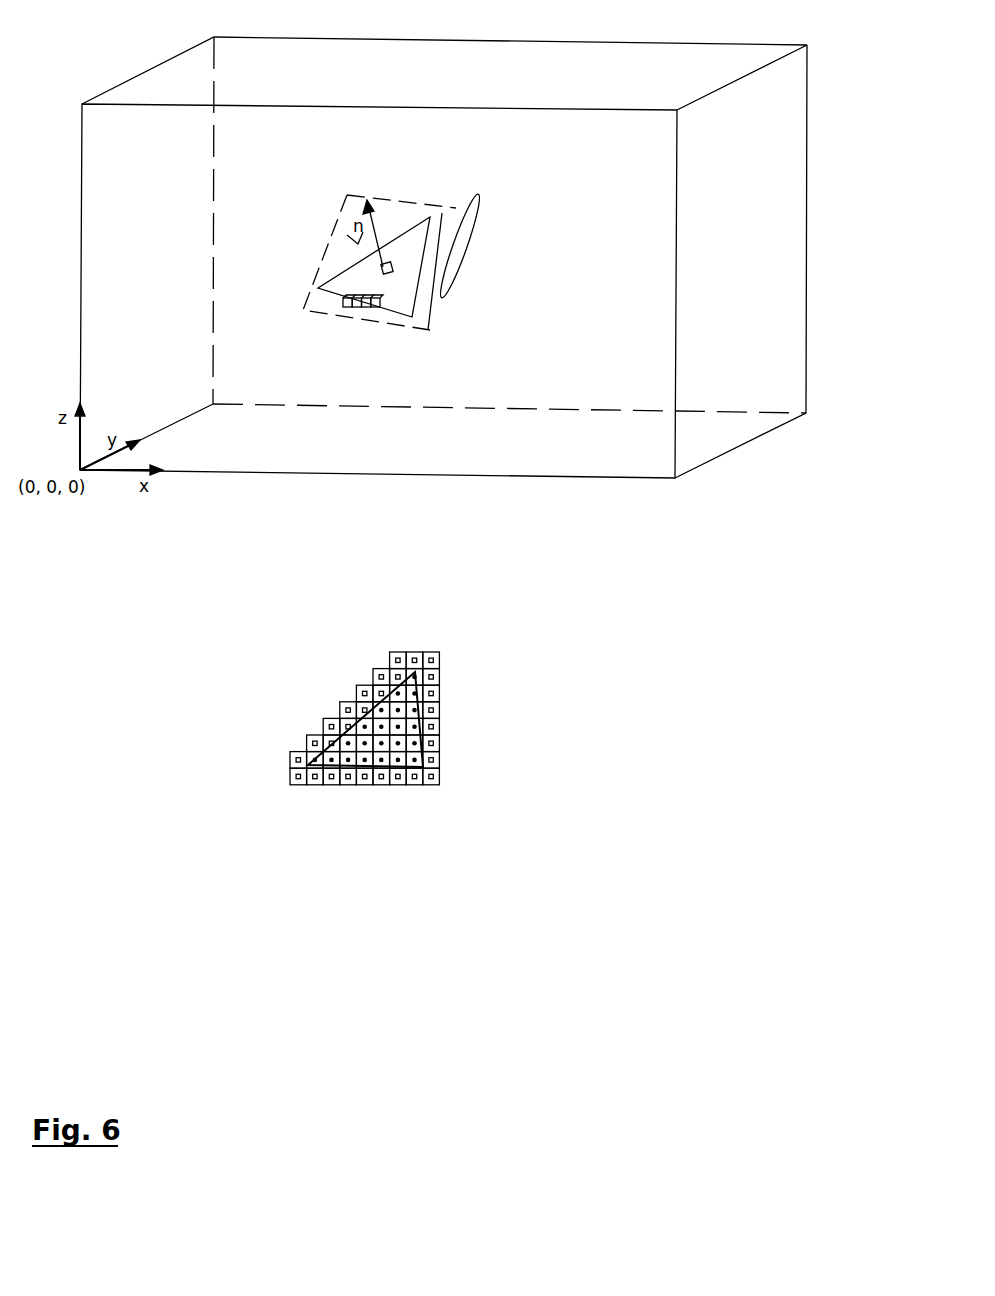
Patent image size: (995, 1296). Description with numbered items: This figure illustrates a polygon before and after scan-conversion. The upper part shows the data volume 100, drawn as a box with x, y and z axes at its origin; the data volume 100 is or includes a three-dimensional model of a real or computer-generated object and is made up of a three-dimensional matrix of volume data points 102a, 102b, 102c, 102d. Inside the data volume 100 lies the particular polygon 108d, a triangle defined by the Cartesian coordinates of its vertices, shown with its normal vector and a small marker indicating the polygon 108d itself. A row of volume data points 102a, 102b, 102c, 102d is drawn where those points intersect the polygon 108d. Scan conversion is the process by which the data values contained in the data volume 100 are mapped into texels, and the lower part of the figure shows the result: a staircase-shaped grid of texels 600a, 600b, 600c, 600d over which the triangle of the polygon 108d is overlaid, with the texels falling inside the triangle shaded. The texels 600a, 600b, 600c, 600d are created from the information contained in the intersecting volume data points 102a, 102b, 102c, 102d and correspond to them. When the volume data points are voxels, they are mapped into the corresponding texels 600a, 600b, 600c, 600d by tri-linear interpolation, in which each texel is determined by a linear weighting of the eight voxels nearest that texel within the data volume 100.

The data volume 100 is at (543, 43).
The polygon 108d is at (447, 295).
The volume data point 102a is at (348, 307).
The volume data point 102b is at (357, 307).
The volume data point 102c is at (366, 307).
The volume data point 102d is at (375, 307).
The texel 600a is at (344, 772).
The texel 600b is at (362, 772).
The texel 600c is at (372, 772).
The texel 600d is at (383, 774).